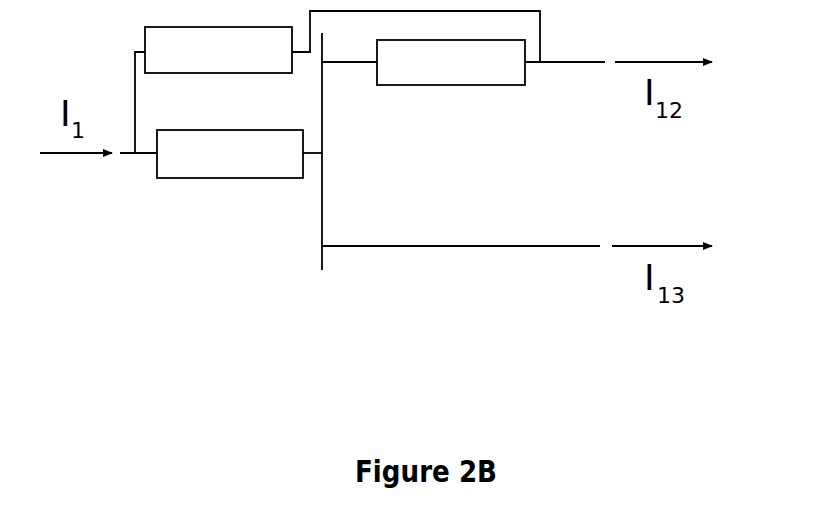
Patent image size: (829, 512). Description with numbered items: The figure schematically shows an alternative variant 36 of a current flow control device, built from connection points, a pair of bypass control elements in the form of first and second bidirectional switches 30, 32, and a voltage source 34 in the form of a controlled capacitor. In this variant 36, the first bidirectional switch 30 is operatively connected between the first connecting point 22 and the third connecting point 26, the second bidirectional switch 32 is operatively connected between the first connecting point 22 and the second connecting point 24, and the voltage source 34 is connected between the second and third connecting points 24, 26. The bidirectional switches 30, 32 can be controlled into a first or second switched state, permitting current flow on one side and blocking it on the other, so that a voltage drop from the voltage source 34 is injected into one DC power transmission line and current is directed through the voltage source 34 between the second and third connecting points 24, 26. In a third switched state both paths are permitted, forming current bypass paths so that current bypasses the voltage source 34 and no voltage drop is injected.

The first connecting point 22 is at (532, 232).
The second connecting point 24 is at (545, 68).
The third connecting point 26 is at (135, 160).
The first bidirectional switch 30 is at (230, 154).
The second bidirectional switch 32 is at (451, 63).
The voltage source 34 is at (218, 50).
The variant of the CFC device 36 is at (296, 294).